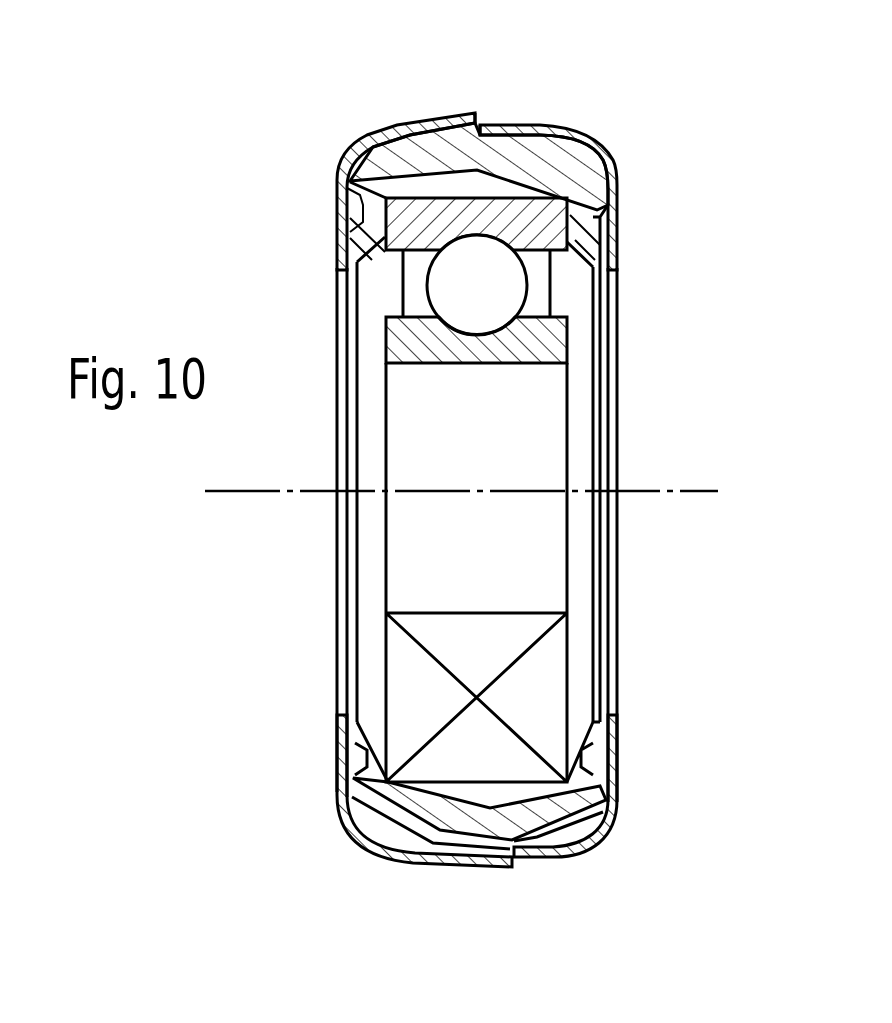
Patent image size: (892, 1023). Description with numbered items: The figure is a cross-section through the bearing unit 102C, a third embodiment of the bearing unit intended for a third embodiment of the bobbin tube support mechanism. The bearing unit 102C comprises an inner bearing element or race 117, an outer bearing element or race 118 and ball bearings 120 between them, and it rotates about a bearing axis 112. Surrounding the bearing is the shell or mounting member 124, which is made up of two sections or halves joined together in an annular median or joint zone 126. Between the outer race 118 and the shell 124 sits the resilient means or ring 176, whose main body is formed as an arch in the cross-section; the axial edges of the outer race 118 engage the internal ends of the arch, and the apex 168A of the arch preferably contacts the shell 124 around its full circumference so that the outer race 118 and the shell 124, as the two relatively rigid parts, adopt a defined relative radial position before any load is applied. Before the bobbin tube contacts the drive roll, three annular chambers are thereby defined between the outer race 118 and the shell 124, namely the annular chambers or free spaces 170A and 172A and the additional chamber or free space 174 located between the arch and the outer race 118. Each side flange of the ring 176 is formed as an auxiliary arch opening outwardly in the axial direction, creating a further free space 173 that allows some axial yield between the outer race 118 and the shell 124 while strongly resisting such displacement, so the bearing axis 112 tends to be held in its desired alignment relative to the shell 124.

The bearing unit 102C is at (229, 251).
The bearing axis 112 is at (691, 490).
The inner bearing element or race 117 is at (543, 338).
The outer bearing element or race 118 is at (553, 212).
The ball bearings 120 is at (505, 289).
The shell or mounting member 124 is at (357, 142).
The annular median or joint zone 126 is at (453, 116).
The apex of the arch 168A is at (487, 124).
The annular chamber or free space 170A is at (395, 830).
The annular chamber or free space 172A is at (578, 827).
The further free space 173 is at (597, 762).
The additional chamber or free space 174 is at (473, 792).
The resilient means or ring 176 is at (575, 166).